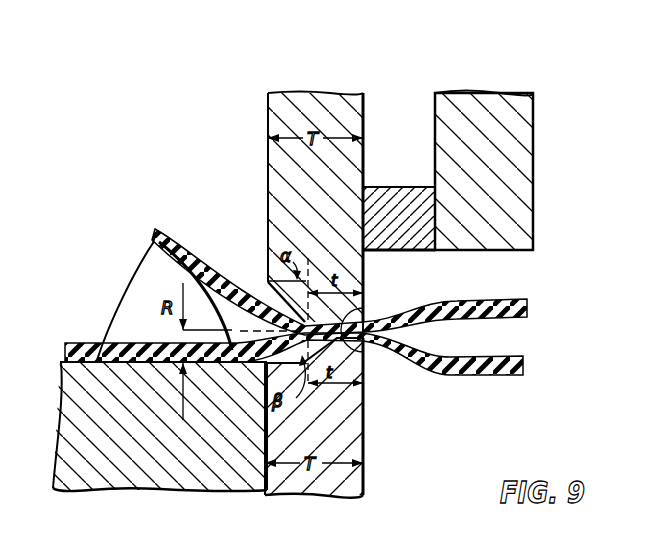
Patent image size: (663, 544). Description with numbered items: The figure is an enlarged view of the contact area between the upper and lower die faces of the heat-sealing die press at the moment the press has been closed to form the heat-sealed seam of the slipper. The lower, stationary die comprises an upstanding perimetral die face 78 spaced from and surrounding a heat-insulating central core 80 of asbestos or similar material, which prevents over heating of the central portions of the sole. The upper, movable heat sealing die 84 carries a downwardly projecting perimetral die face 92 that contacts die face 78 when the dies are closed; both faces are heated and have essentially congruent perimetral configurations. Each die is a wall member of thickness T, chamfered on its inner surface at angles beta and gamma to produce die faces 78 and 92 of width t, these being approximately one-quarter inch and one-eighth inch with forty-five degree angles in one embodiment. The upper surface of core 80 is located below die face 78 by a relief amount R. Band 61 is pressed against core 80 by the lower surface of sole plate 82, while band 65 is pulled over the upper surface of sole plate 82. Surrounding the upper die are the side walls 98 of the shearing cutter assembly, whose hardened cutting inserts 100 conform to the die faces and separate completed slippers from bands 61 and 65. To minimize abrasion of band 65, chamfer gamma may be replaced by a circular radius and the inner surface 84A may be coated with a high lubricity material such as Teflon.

The upper, movable heat sealing die 84 is at (278, 150).
The inner surface of heat sealing die 84A is at (268, 177).
The hardened cutting inserts 100 is at (405, 202).
The side walls 98 is at (524, 132).
The heat-insulating central core 80 is at (63, 421).
The perimetral die face 78 is at (350, 340).
The sole plate 82 is at (140, 280).
The band 65 is at (197, 246).
The band 61 is at (194, 362).
The downwardly projecting perimetral die face 92 is at (360, 324).